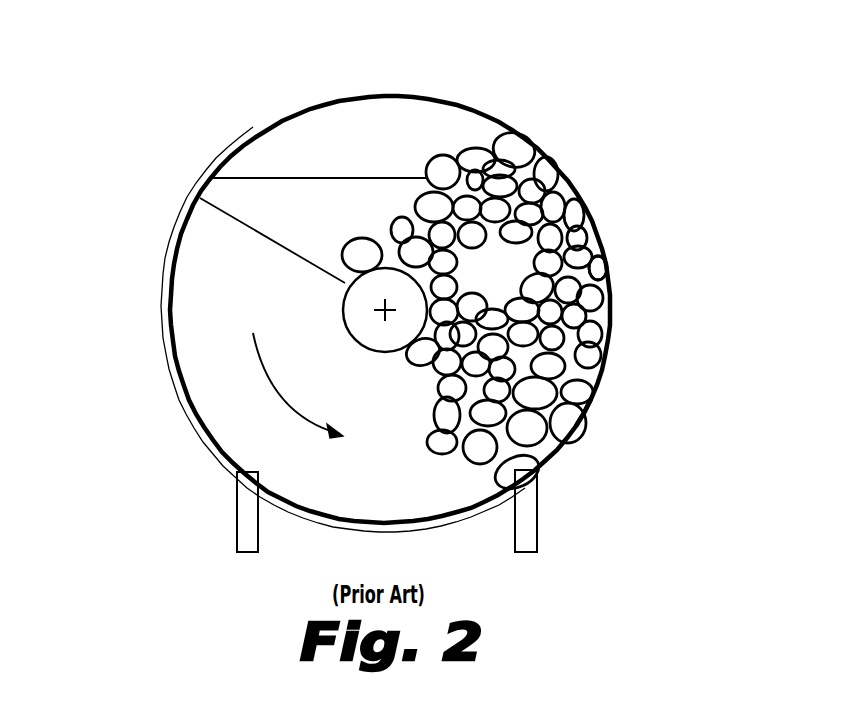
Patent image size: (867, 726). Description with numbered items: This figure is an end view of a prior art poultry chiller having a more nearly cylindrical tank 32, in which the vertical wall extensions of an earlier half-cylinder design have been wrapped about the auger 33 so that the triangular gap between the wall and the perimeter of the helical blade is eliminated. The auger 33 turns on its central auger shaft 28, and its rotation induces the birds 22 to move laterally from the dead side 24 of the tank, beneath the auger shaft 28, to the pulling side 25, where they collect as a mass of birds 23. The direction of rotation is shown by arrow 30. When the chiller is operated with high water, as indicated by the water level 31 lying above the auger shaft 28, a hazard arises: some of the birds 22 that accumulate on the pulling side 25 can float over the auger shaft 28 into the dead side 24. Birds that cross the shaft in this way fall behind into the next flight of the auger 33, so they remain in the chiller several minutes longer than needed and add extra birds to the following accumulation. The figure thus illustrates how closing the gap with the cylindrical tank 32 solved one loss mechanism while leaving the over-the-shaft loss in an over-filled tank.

The birds 22 is at (600, 327).
The mass of birds 23 is at (508, 281).
The dead side 24 is at (240, 289).
The pulling side 25 is at (592, 388).
The auger shaft 28 is at (347, 324).
The direction of rotation 30 is at (298, 412).
The water level 31 is at (343, 178).
The tank 32 is at (180, 408).
The auger 33 is at (408, 117).